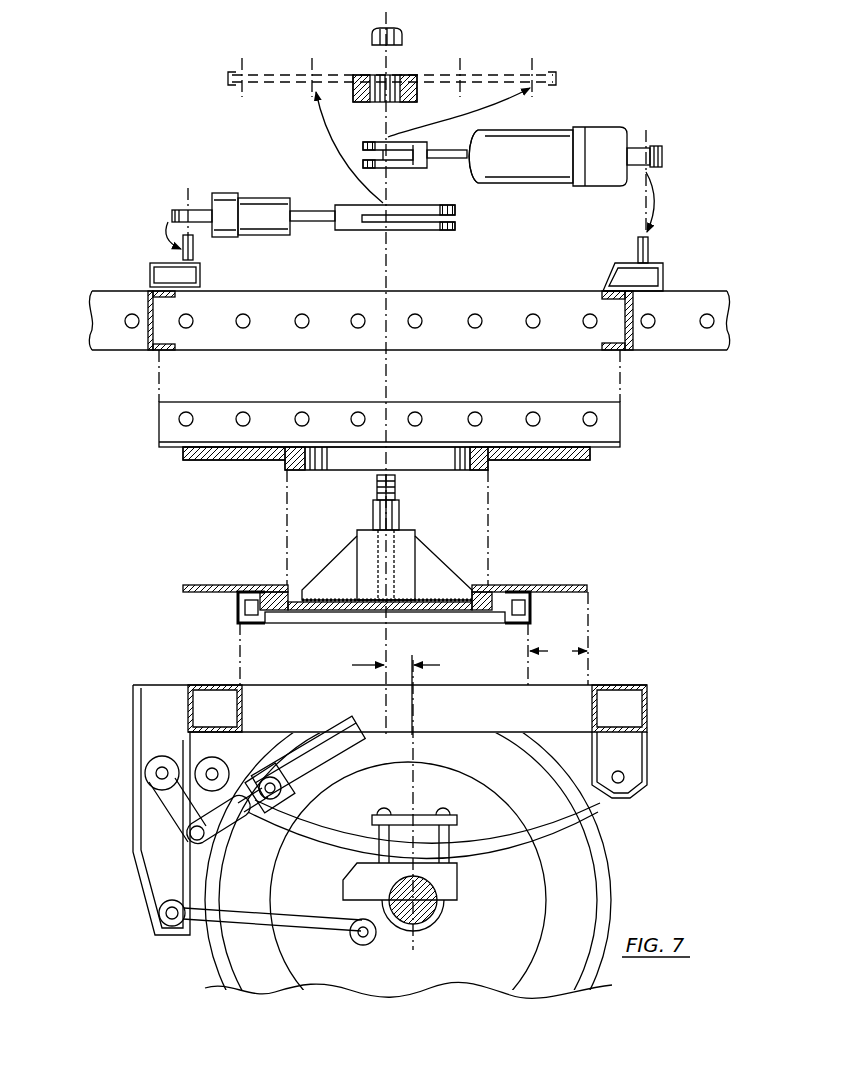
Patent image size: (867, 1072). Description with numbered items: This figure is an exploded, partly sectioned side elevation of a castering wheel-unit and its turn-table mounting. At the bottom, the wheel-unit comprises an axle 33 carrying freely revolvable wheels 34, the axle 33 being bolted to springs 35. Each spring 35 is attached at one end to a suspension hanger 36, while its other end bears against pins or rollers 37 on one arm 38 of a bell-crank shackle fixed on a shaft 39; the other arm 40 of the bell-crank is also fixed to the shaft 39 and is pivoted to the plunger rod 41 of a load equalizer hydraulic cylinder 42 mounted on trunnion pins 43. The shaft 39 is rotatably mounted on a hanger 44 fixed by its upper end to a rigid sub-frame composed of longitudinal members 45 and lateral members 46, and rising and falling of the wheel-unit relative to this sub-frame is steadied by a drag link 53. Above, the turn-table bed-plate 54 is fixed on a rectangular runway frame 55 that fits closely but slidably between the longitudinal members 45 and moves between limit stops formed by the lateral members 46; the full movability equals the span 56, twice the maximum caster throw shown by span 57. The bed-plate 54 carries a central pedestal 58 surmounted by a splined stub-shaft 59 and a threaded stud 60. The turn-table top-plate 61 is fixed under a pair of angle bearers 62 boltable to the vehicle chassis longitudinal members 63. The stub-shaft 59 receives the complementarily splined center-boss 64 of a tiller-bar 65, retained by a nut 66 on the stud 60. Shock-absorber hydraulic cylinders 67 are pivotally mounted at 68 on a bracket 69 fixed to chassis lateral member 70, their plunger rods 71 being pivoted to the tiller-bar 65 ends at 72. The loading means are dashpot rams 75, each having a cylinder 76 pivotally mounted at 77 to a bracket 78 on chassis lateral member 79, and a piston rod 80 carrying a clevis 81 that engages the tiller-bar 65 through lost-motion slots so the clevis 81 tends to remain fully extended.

The axle 33 is at (437, 913).
The wheels 34 is at (605, 853).
The springs 35 is at (578, 812).
The suspension hangers 36 is at (633, 742).
The pins or rollers 37 is at (236, 772).
The arm of shackle 38 is at (200, 765).
The shaft 39 is at (145, 771).
The other arm of bell-crank 40 is at (165, 805).
The plunger rod 41 is at (222, 825).
The load equalizer hydraulic cylinder 42 is at (318, 722).
The trunnion pins 43 is at (284, 815).
The hanger 44 is at (148, 840).
The longitudinal members 45 is at (470, 700).
The lateral members 46 is at (212, 700).
The drag link 53 is at (205, 917).
The turn-table bed-plate 54 is at (545, 585).
The runway frame 55 is at (245, 607).
The span of movability 56 is at (558, 652).
The caster throw span 57 is at (396, 695).
The central pedestal 58 is at (400, 546).
The stub-shaft 59 is at (372, 515).
The threaded stud 60 is at (376, 484).
The turn-table top-plate 61 is at (545, 462).
The angle bearers 62 is at (615, 420).
The vehicle chassis longitudinal members 63 is at (683, 305).
The center-boss 64 is at (418, 80).
The tiller-bar 65 is at (347, 73).
The nut 66 is at (404, 36).
The hydraulic cylinders 67 is at (540, 145).
The pivot mounting 68 is at (652, 246).
The bracket 69 is at (625, 275).
The chassis lateral member 70 is at (630, 352).
The plunger rods 71 is at (437, 168).
The pivot connection 72 is at (459, 112).
The dashpot rams 75 is at (272, 205).
The cylinder 76 is at (262, 232).
The pivot mounting 77 is at (166, 224).
The bracket 78 is at (190, 275).
The vehicle chassis lateral member 79 is at (152, 352).
The piston rod 80 is at (312, 222).
The clevis 81 is at (425, 230).